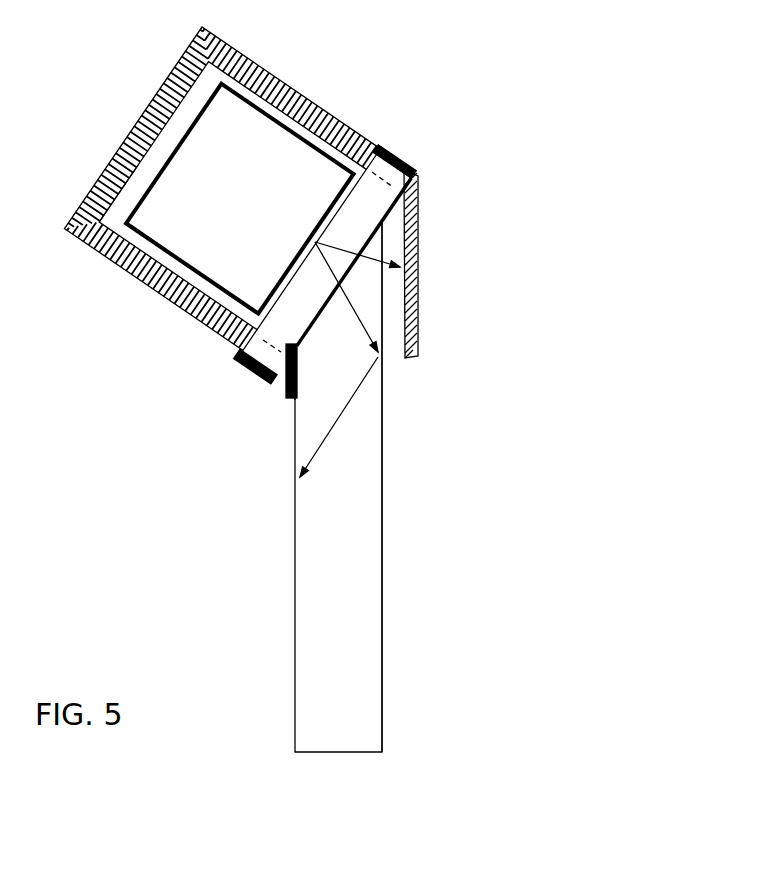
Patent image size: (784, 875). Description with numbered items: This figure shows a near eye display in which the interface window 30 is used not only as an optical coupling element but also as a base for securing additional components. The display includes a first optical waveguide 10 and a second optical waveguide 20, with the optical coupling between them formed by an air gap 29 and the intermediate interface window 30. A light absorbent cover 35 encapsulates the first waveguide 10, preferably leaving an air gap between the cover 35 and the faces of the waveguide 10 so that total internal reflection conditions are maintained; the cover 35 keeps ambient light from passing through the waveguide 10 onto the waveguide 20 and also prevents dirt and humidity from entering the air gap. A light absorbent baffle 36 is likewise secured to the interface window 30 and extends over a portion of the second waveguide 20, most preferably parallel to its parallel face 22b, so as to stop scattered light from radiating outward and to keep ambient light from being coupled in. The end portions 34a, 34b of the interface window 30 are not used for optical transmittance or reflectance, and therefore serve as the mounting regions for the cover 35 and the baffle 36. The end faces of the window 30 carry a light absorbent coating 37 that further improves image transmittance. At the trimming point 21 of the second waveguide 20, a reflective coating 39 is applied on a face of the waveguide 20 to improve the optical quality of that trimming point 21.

The first optical waveguide 10 is at (239, 199).
The second optical waveguide 20 is at (338, 486).
The trimming point 21 is at (303, 347).
The parallel face 22b is at (385, 543).
The air gap 29 is at (113, 218).
The interface window 30 is at (354, 262).
The end portion of the interface window 34a is at (383, 172).
The end portion of the interface window 34b is at (266, 352).
The cover 35 is at (133, 127).
The baffle 36 is at (422, 262).
The light absorbent coating 37 is at (410, 158).
The reflective coating 39 is at (287, 382).